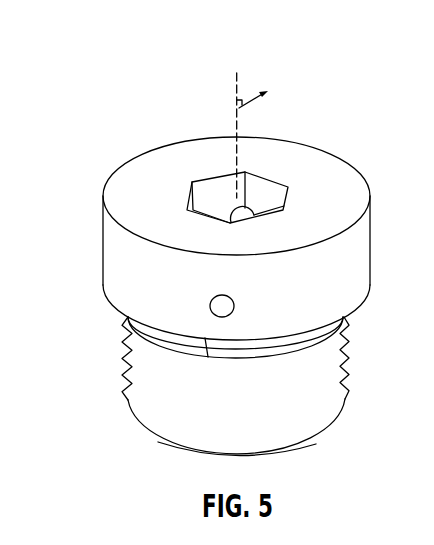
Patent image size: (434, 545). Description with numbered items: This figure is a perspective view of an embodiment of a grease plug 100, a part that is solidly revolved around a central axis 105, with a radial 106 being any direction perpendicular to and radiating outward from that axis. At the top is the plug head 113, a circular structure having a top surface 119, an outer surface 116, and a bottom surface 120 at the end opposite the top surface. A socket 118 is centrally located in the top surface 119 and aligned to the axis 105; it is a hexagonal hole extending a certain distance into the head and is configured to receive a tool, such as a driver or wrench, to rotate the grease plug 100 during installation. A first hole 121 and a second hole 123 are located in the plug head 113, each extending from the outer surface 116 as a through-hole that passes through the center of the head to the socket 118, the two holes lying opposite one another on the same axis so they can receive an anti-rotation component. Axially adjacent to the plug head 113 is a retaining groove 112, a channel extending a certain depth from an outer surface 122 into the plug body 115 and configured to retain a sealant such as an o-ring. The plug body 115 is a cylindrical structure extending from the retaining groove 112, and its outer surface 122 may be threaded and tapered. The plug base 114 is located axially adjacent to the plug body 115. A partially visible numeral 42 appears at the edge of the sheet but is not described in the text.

The grease plug 100 is at (134, 55).
The central axis 105 is at (236, 93).
The radial 106 is at (250, 98).
The retaining groove 112 is at (267, 343).
The plug head 113 is at (356, 252).
The plug base 114 is at (303, 452).
The plug body 115 is at (333, 376).
The outer surface 116 is at (120, 255).
The socket 118 is at (273, 181).
The top surface 119 is at (122, 182).
The bottom surface 120 is at (208, 346).
The first hole 121 is at (208, 304).
The outer surface 122 is at (150, 412).
The second hole 123 is at (284, 208).
The adjacent component 42 is at (425, 328).